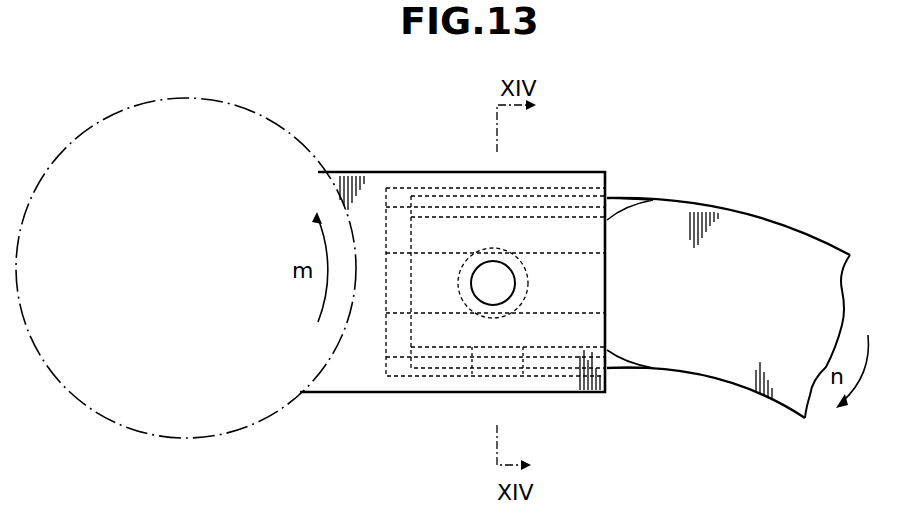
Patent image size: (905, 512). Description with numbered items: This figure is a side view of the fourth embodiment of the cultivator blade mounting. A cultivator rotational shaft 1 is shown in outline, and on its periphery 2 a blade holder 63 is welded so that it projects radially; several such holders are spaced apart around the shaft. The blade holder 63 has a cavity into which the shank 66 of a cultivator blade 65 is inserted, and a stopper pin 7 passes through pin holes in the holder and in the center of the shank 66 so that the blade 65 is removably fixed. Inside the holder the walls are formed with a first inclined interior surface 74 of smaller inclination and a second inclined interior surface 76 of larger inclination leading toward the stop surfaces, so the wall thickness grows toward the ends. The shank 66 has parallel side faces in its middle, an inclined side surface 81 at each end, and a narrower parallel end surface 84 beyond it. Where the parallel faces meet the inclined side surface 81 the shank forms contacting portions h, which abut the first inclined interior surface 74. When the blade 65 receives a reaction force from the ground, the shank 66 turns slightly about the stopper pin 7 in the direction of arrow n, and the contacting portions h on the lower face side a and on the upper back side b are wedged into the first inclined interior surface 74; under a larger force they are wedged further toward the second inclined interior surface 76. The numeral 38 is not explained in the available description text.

The cultivator rotational shaft 1 is at (178, 98).
The periphery 2 is at (245, 112).
The blade holder 63 is at (432, 166).
The upper back side b is at (374, 166).
The shank 66 is at (498, 197).
The contacting portions h is at (540, 218).
The stopper pin 7 is at (485, 287).
The second inclined interior surface 76 is at (401, 380).
The first inclined interior surface 74 is at (468, 380).
The parallel end surface 84 is at (566, 382).
The lower face side a is at (596, 398).
The cultivator blade 65 is at (726, 210).
The inclined side surface 81 is at (635, 200).
The guide member 38 is at (816, 256).